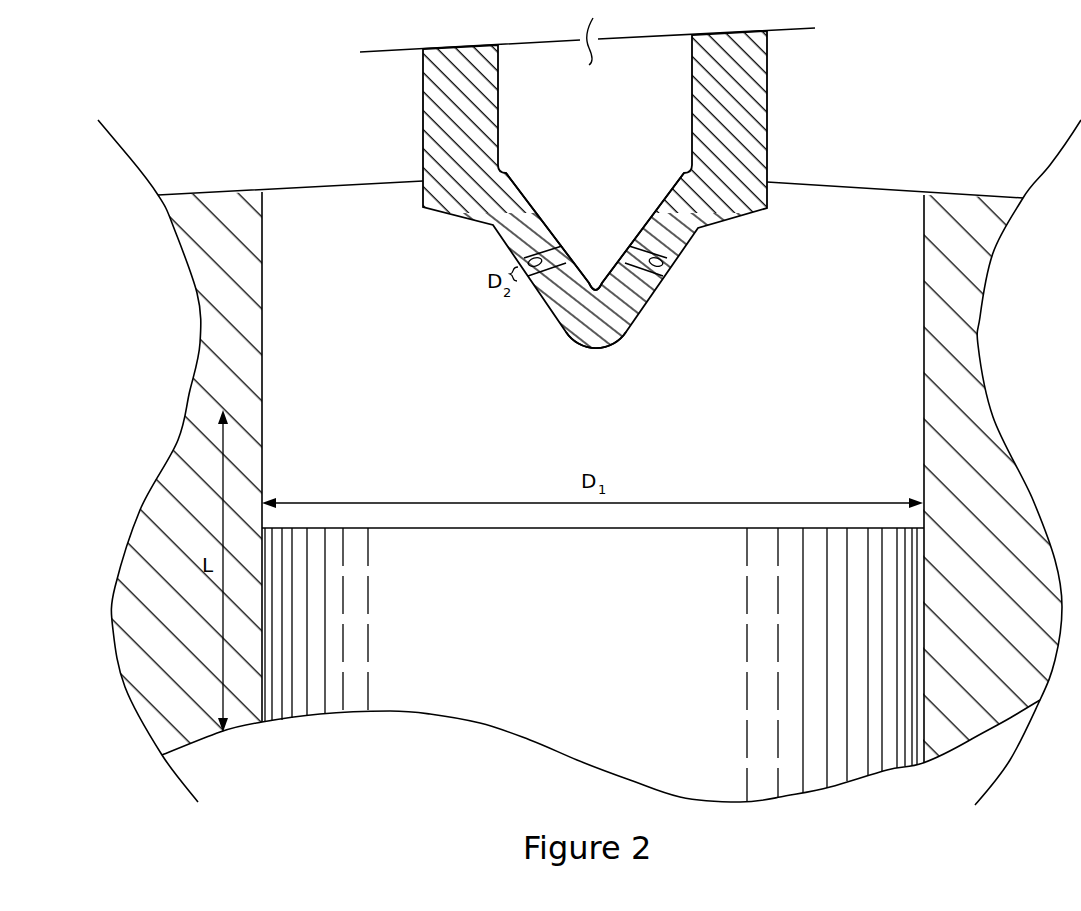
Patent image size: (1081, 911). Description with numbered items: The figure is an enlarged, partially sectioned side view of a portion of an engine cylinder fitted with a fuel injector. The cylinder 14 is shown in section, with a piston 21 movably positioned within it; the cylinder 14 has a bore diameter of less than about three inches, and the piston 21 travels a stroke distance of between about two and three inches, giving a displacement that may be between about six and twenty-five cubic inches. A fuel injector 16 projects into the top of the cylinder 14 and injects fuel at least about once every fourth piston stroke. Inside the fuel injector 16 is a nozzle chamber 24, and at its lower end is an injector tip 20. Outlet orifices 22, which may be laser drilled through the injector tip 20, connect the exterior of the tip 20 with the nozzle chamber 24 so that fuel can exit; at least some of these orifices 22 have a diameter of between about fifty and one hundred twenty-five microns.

The cylinder 14 is at (850, 462).
The fuel injector 16 is at (767, 60).
The injector tip 20 is at (593, 360).
The piston 21 is at (593, 727).
The outlet orifices 22 is at (662, 262).
The nozzle chamber 24 is at (645, 185).